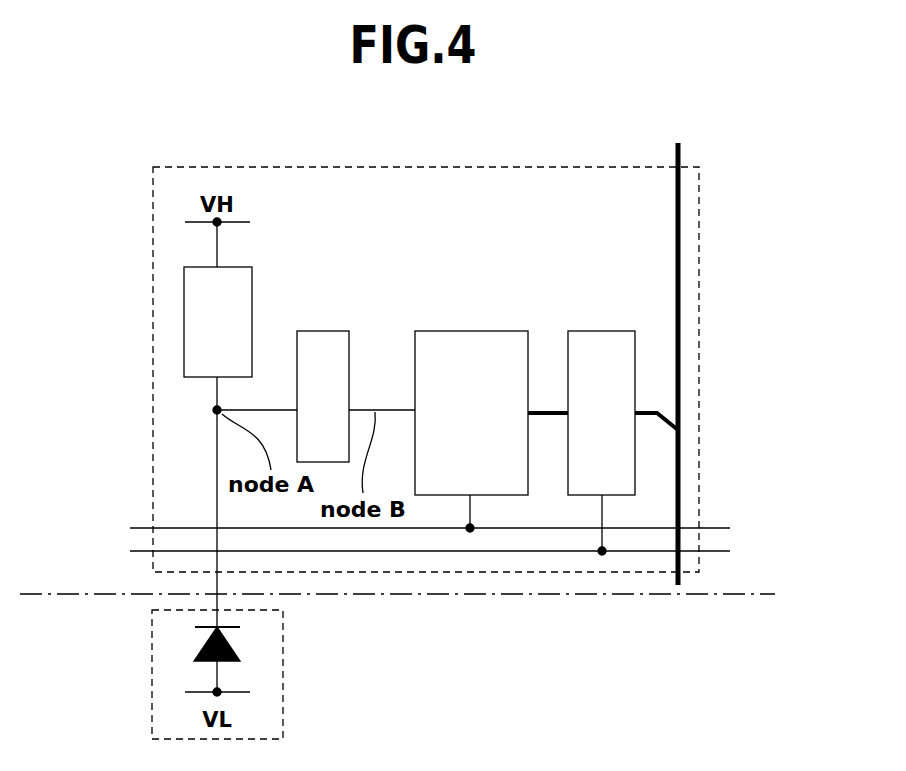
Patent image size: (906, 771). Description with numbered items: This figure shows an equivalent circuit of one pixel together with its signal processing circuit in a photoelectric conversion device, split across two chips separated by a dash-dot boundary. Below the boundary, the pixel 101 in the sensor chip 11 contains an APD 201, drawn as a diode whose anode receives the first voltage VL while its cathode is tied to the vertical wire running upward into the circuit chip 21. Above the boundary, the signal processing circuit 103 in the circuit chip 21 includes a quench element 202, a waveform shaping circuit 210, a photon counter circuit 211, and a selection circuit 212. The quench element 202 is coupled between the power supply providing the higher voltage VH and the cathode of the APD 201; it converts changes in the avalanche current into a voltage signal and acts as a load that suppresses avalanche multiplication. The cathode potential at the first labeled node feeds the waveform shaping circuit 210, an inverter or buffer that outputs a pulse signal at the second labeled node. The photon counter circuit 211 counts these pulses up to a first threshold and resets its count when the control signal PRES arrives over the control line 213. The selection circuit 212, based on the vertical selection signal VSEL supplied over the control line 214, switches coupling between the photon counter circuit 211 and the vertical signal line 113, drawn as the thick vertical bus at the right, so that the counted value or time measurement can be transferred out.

The sensor chip 11 is at (64, 636).
The circuit chip 21 is at (64, 571).
The pixel 101 is at (152, 690).
The signal processing circuit 103 is at (152, 212).
The vertical signal line 113 is at (681, 305).
The APD 201 is at (240, 643).
The quench element 202 is at (184, 325).
The waveform shaping circuit 210 is at (323, 331).
The photon counter circuit 211 is at (470, 331).
The selection circuit 212 is at (605, 331).
The control line 213 is at (730, 528).
The control line 214 is at (730, 551).